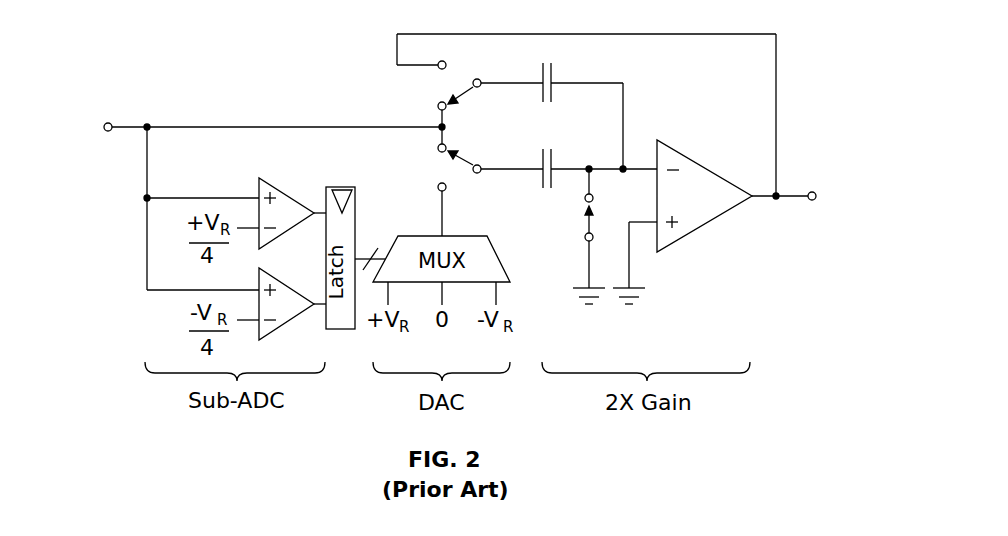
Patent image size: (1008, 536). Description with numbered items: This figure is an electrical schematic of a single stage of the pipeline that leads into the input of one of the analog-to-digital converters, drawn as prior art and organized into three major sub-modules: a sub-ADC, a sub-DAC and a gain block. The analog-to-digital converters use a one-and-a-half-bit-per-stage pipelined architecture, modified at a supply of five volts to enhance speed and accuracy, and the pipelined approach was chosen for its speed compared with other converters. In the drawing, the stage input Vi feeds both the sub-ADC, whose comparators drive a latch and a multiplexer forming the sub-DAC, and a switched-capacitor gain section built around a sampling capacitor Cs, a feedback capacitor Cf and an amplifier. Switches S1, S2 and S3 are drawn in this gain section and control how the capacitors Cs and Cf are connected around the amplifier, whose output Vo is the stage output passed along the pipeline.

The input voltage terminal Vi is at (110, 126).
The output voltage terminal Vo is at (801, 199).
The switch S1 is at (573, 228).
The switch S2 is at (439, 103).
The switch S3 is at (456, 209).
The feedback capacitor Cf is at (552, 110).
The sampling capacitor Cs is at (569, 163).